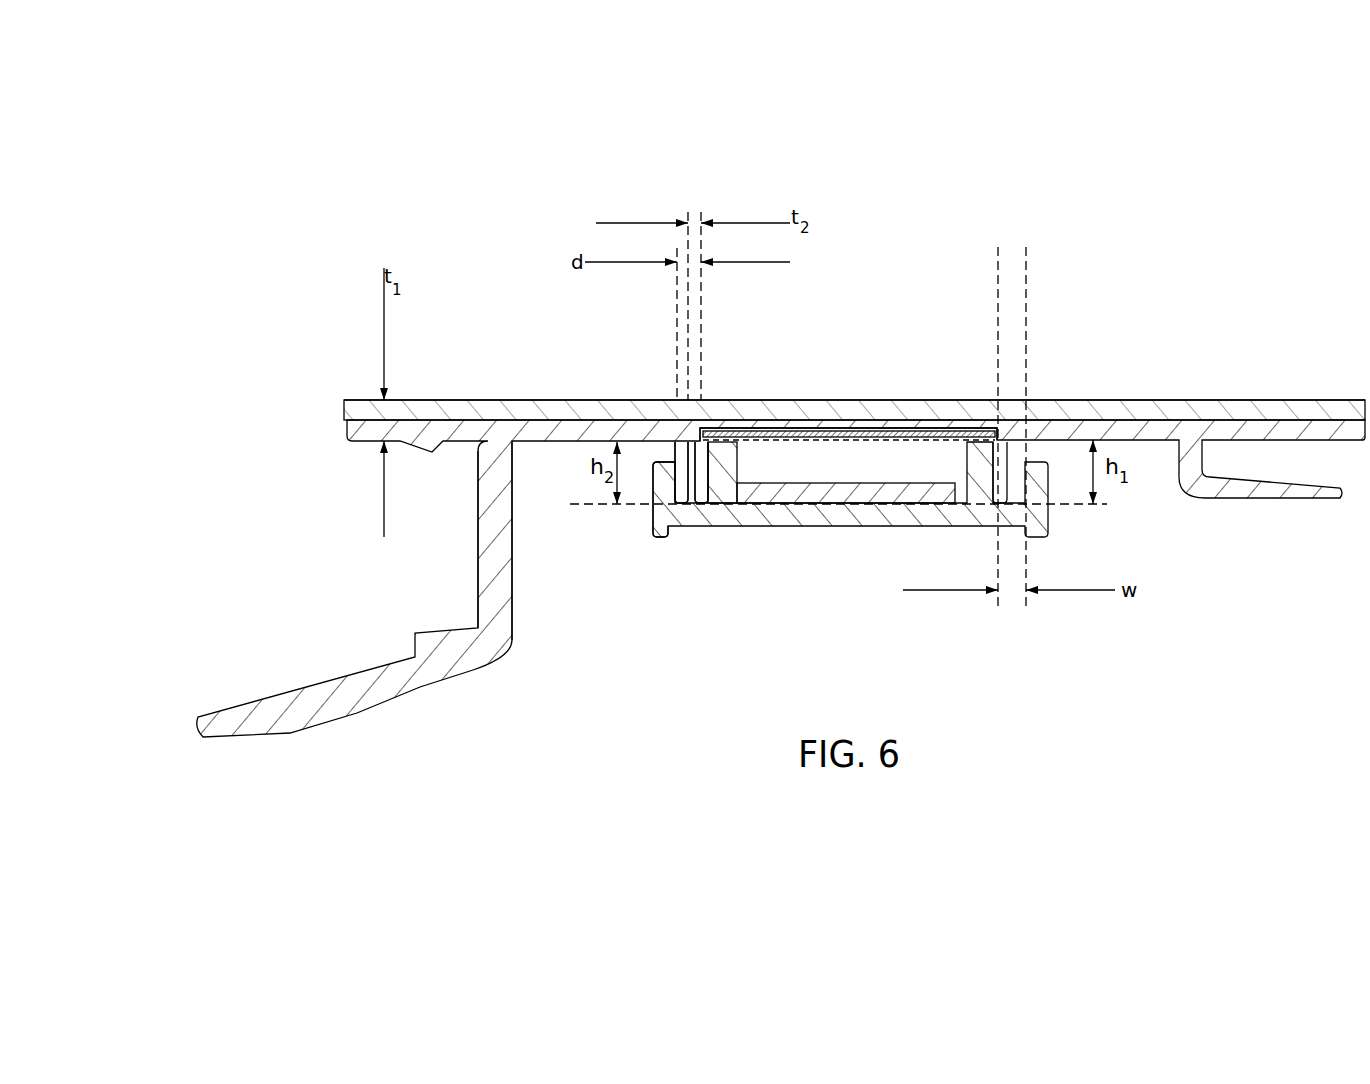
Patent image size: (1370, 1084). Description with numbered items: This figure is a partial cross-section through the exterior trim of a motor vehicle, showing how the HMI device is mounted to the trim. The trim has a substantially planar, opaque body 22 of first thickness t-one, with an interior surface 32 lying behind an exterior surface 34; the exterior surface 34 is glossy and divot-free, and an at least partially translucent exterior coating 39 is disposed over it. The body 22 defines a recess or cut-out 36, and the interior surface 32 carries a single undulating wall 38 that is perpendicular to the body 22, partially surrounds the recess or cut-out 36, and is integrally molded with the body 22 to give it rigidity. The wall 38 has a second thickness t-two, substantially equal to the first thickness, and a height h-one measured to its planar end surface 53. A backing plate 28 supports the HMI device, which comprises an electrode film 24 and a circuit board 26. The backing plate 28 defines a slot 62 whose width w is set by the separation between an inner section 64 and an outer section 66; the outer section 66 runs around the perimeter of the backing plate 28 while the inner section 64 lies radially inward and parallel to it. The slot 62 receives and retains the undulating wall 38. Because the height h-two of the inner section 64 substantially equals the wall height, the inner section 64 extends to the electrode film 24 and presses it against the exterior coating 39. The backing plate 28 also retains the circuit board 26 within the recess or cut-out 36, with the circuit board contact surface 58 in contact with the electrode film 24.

The body 22 is at (345, 437).
The electrode film 24 is at (856, 430).
The circuit board 26 is at (880, 512).
The backing plate 28 is at (704, 527).
The interior surface 32 is at (539, 442).
The exterior surface 34 is at (340, 424).
The recess or cut-out 36 is at (998, 321).
The single undulating wall 38 is at (675, 455).
The exterior coating 39 is at (473, 400).
The end surface 53 is at (693, 505).
The contact surface 58 is at (893, 482).
The slot 62 is at (878, 275).
The inner section 64 is at (722, 478).
The outer section 66 is at (665, 493).